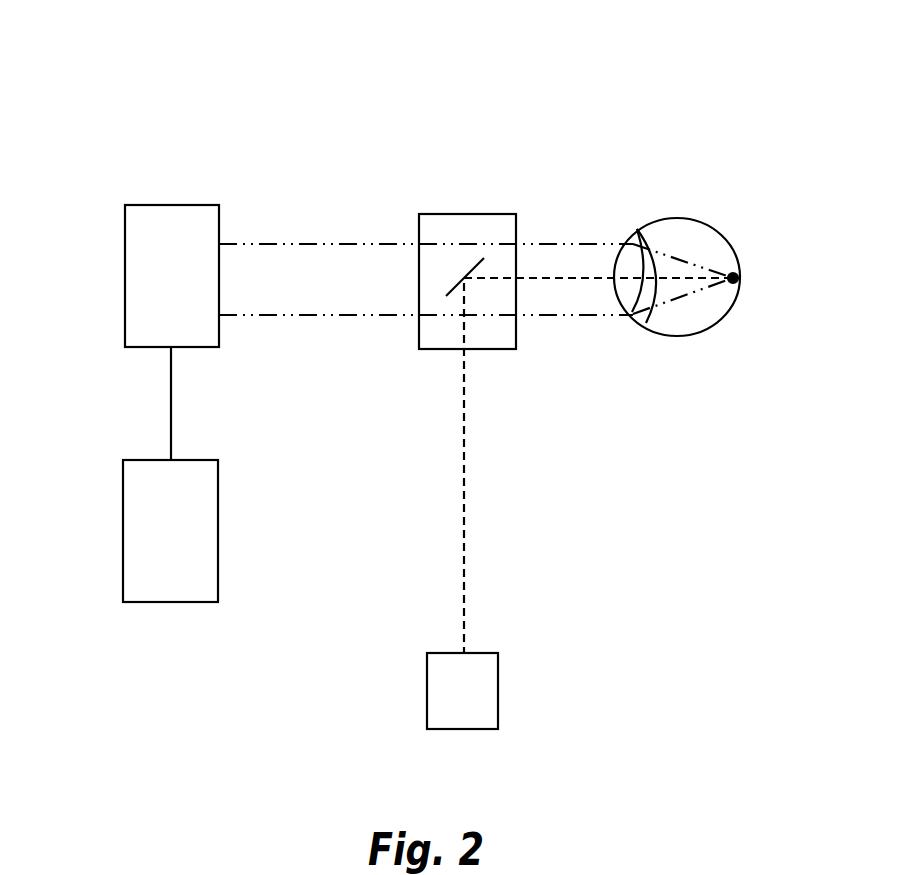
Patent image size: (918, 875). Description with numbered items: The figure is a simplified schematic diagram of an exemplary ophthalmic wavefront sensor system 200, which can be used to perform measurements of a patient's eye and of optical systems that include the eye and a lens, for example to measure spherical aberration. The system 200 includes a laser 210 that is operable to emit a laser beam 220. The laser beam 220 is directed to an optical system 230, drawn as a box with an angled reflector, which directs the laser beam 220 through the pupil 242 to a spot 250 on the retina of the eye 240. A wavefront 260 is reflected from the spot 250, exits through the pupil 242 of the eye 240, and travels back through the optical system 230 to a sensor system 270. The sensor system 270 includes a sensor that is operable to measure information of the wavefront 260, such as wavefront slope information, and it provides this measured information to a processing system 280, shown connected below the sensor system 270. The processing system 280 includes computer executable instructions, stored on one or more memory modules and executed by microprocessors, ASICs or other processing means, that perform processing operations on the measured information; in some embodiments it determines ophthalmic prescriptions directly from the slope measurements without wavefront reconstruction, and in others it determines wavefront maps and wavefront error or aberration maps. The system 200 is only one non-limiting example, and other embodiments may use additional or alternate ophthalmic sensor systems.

The ophthalmic wavefront sensor system 200 is at (113, 73).
The laser 210 is at (427, 653).
The laser beam 220 is at (462, 556).
The optical system 230 is at (419, 213).
The eye 240 is at (717, 232).
The pupil 242 is at (630, 273).
The spot 250 is at (738, 282).
The wavefront 260 is at (553, 315).
The sensor system 270 is at (125, 240).
The processing system 280 is at (123, 494).